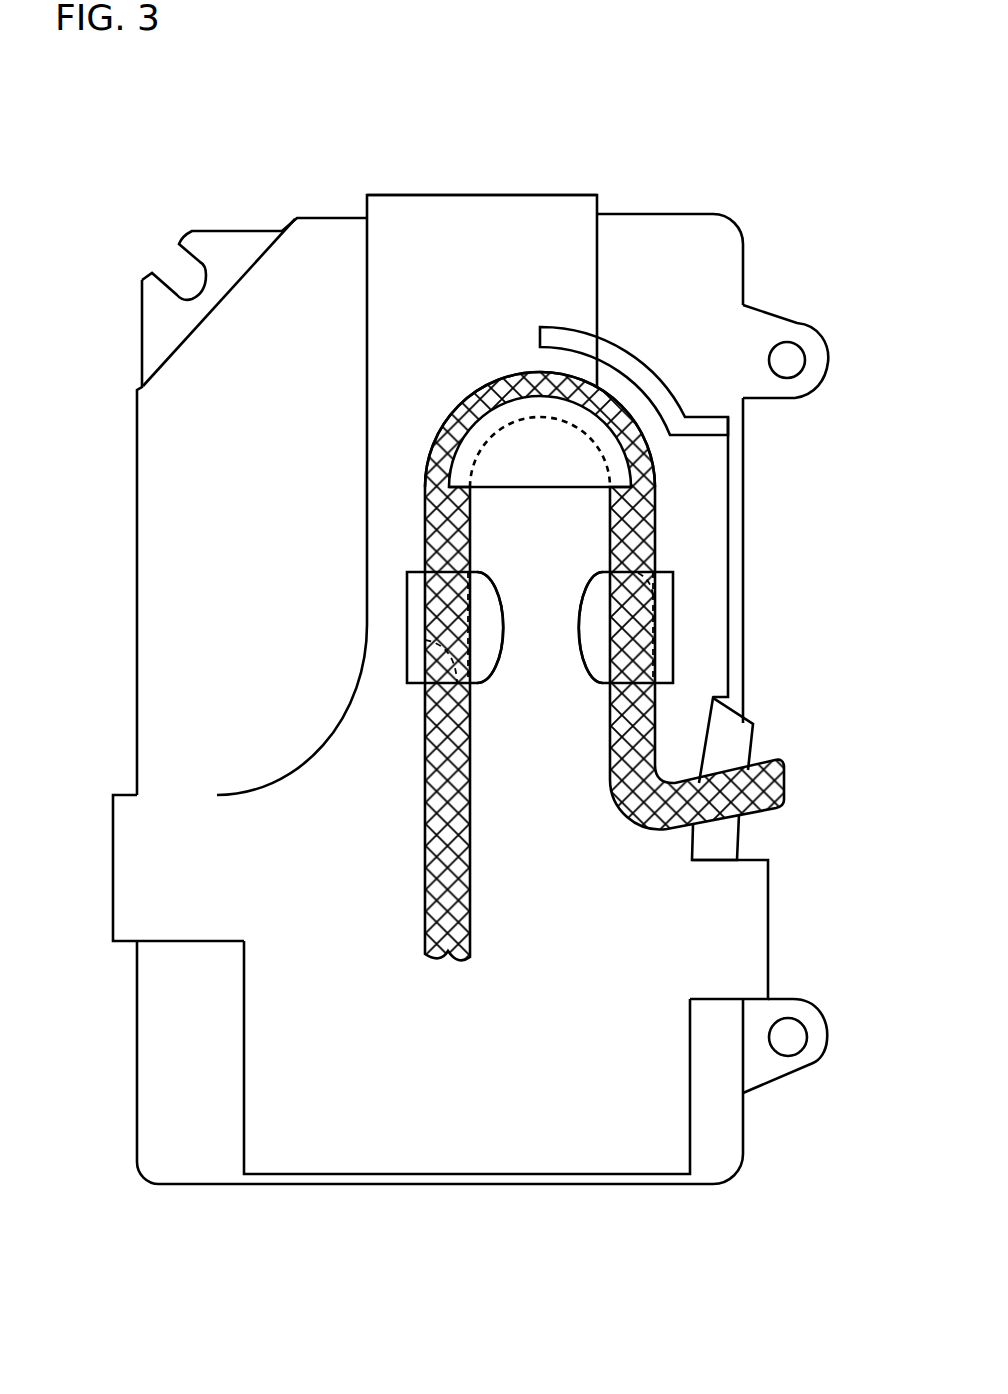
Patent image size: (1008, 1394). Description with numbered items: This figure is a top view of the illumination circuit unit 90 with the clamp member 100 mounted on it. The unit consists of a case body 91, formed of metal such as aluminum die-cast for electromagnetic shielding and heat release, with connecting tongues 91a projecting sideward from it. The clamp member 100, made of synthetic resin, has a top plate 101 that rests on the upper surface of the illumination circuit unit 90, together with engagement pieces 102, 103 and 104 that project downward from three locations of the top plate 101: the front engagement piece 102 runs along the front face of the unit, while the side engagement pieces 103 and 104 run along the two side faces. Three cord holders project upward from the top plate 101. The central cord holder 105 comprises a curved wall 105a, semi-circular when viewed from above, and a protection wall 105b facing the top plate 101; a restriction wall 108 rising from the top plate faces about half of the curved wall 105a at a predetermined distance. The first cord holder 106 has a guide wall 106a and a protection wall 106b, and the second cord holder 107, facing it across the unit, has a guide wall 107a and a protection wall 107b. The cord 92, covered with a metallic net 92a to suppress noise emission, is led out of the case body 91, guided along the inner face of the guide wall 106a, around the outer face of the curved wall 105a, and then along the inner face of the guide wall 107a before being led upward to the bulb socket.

The illumination circuit unit 90 is at (705, 228).
The case body 91 is at (137, 527).
The connecting tongues 91a is at (219, 237).
The cord 92 is at (653, 717).
The metallic net 92a is at (660, 833).
The clamp member 100 is at (418, 203).
The top plate 101 is at (397, 1138).
The front engagement piece 102 is at (507, 197).
The side engagement piece 103 is at (112, 907).
The side engagement piece 104 is at (770, 913).
The central cord holder 105 is at (503, 450).
The curved wall 105a is at (528, 413).
The protection wall 105b is at (452, 414).
The first cord holder 106 is at (673, 613).
The guide wall 106a is at (647, 552).
The protection wall 106b is at (590, 645).
The second cord holder 107 is at (413, 617).
The guide wall 107a is at (423, 708).
The protection wall 107b is at (490, 606).
The restriction wall 108 is at (623, 357).